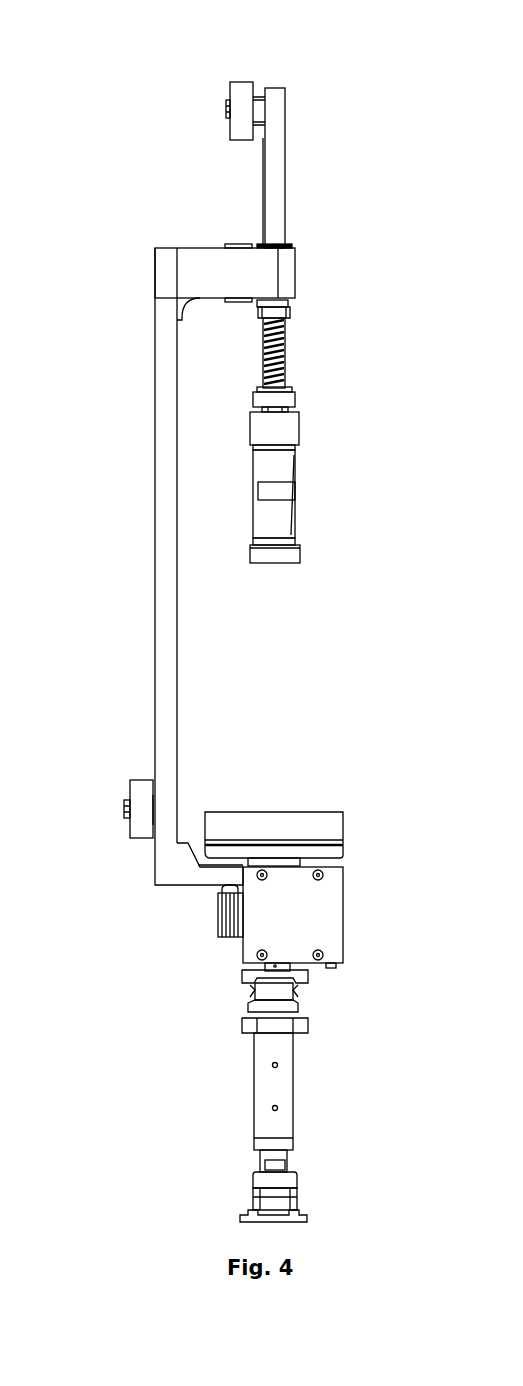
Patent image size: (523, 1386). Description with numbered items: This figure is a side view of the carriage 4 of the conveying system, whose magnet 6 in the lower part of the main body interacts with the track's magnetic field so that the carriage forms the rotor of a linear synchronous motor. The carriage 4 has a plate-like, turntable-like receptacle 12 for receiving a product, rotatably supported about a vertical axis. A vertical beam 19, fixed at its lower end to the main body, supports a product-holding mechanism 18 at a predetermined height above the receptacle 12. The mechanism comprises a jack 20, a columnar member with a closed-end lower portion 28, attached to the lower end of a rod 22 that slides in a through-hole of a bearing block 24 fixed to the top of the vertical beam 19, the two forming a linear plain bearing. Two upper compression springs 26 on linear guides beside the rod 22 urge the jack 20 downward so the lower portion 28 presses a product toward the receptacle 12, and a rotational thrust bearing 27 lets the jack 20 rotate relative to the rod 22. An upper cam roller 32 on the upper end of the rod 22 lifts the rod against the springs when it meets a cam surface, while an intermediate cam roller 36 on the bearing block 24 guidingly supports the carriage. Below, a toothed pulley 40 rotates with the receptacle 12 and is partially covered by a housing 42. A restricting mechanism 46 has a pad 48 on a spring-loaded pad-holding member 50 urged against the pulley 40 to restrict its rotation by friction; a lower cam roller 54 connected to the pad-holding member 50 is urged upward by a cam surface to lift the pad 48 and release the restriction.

The carriage 4 is at (158, 60).
The magnet 6 is at (293, 1085).
The receptacle 12 is at (343, 825).
The product-holding mechanism 18 is at (360, 376).
The vertical beam 19 is at (178, 658).
The jack 20 is at (312, 490).
The rod 22 is at (286, 200).
The bearing block 24 is at (296, 275).
The upper compression springs 26 is at (285, 353).
The rotational thrust bearing 27 is at (300, 430).
The lower portion 28 is at (300, 555).
The upper cam roller 32 is at (230, 88).
The intermediate cam roller 36 is at (238, 245).
The pulley 40 is at (218, 922).
The housing 42 is at (343, 913).
The restricting mechanism 46 is at (114, 861).
The pad 48 is at (218, 893).
The pad-holding member 50 is at (203, 863).
The lower cam roller 54 is at (130, 785).